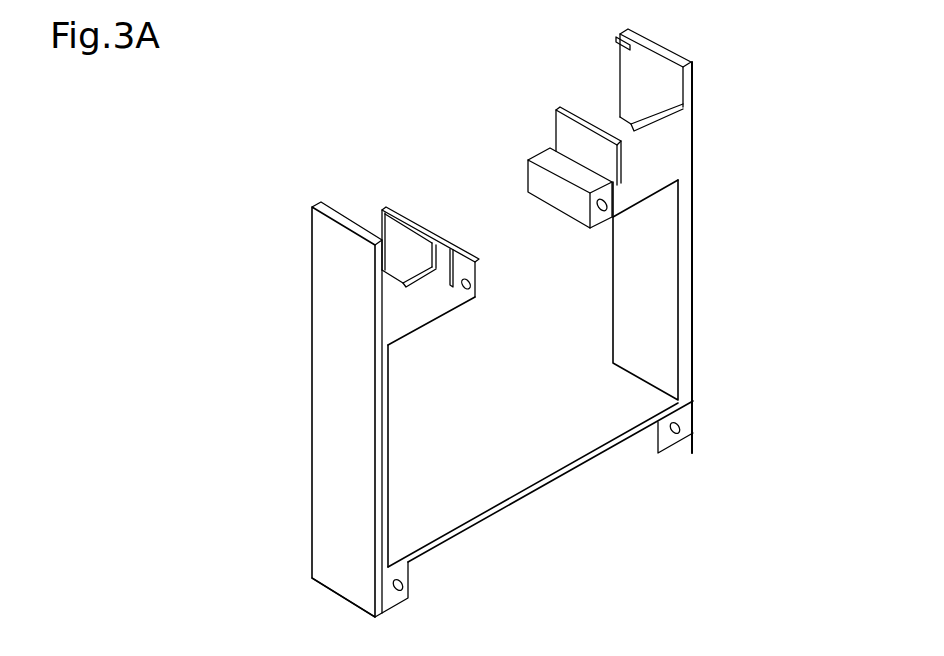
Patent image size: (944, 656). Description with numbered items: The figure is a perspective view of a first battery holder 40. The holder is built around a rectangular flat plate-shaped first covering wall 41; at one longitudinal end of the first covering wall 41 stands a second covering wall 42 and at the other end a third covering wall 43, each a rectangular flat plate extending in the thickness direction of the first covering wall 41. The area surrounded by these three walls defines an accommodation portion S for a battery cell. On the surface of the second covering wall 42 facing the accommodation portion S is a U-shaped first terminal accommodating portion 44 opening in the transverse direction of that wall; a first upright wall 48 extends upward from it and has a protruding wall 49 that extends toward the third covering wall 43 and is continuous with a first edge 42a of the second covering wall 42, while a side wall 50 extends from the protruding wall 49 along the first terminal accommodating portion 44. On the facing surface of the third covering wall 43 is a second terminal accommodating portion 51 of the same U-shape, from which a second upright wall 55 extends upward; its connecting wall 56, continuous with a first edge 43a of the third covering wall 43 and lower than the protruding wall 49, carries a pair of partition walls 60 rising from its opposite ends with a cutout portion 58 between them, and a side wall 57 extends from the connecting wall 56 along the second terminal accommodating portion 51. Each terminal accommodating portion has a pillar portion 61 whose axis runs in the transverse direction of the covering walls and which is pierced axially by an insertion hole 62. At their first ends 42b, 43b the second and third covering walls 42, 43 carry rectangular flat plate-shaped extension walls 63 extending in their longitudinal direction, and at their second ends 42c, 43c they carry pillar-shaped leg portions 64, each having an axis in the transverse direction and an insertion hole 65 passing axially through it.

The first battery holder 40 is at (793, 72).
The first covering wall 41 is at (548, 485).
The second covering wall 42 is at (690, 257).
The first edge 42a is at (691, 345).
The first end 42b is at (694, 178).
The second end 42c is at (697, 402).
The third covering wall 43 is at (497, 339).
The first edge 43a is at (388, 443).
The first end 43b is at (311, 330).
The second end 43c is at (314, 561).
The first terminal accommodating portion 44 is at (643, 193).
The first upright wall 48 is at (650, 126).
The protruding wall 49 is at (684, 147).
The side wall 50 is at (564, 133).
The second terminal accommodating portion 51 is at (408, 328).
The second upright wall 55 is at (416, 253).
The connecting wall 56 is at (392, 311).
The side wall 57 is at (412, 232).
The cutout portion 58 is at (410, 270).
The partition walls 60 is at (456, 258).
The pillar portion 61 is at (556, 203).
The insertion hole 62 is at (607, 222).
The extension wall 63 is at (320, 232).
The leg portion 64 is at (388, 604).
The insertion hole 65 is at (406, 582).
The accommodation portion S is at (520, 363).